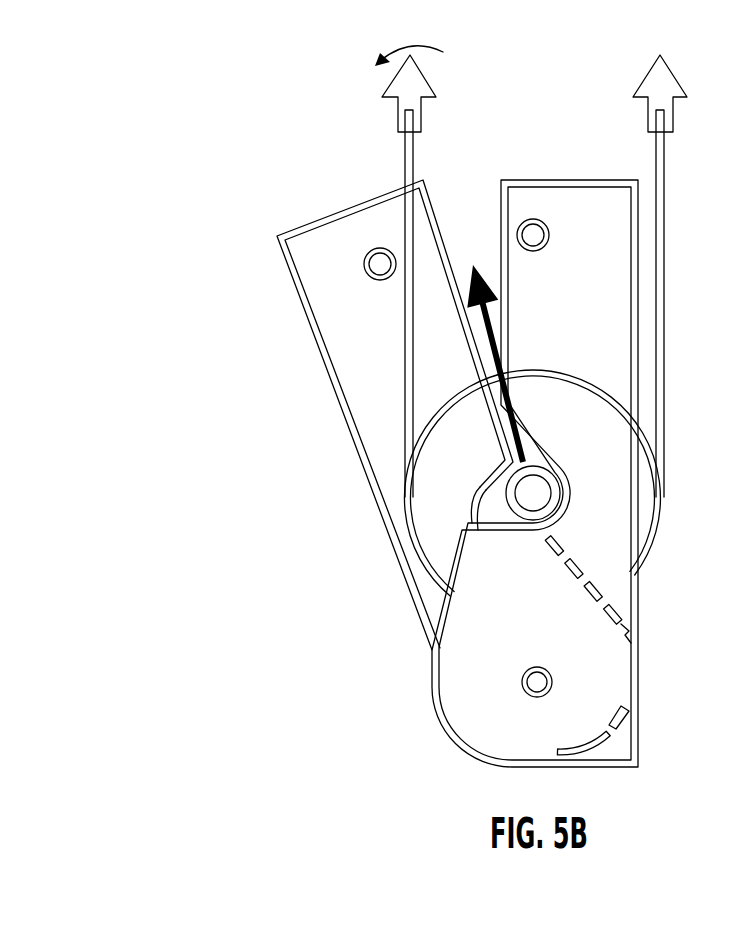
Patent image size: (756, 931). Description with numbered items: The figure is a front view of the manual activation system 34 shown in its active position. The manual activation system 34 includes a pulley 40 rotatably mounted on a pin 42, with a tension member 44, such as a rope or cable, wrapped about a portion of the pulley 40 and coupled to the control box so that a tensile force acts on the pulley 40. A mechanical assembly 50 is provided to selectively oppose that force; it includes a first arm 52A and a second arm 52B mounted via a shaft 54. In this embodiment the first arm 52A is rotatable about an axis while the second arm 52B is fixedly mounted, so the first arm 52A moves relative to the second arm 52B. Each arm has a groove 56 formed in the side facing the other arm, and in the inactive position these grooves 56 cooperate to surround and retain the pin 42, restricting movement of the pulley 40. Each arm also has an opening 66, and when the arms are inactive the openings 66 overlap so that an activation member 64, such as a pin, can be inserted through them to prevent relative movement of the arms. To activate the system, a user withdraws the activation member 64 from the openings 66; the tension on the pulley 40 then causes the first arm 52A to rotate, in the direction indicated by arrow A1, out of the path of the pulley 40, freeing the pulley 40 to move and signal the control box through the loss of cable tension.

The manual activation system 34 is at (248, 200).
The pulley 40 is at (652, 543).
The pin 42 is at (528, 494).
The tension member 44 is at (408, 163).
The mechanical assembly 50 is at (652, 245).
The first arm 52A is at (350, 375).
The second arm 52B is at (618, 343).
The shaft 54 is at (540, 683).
The groove 56 is at (477, 493).
The activation member 64 is at (533, 233).
The opening 66 is at (375, 265).
The rotation direction A1 is at (405, 42).